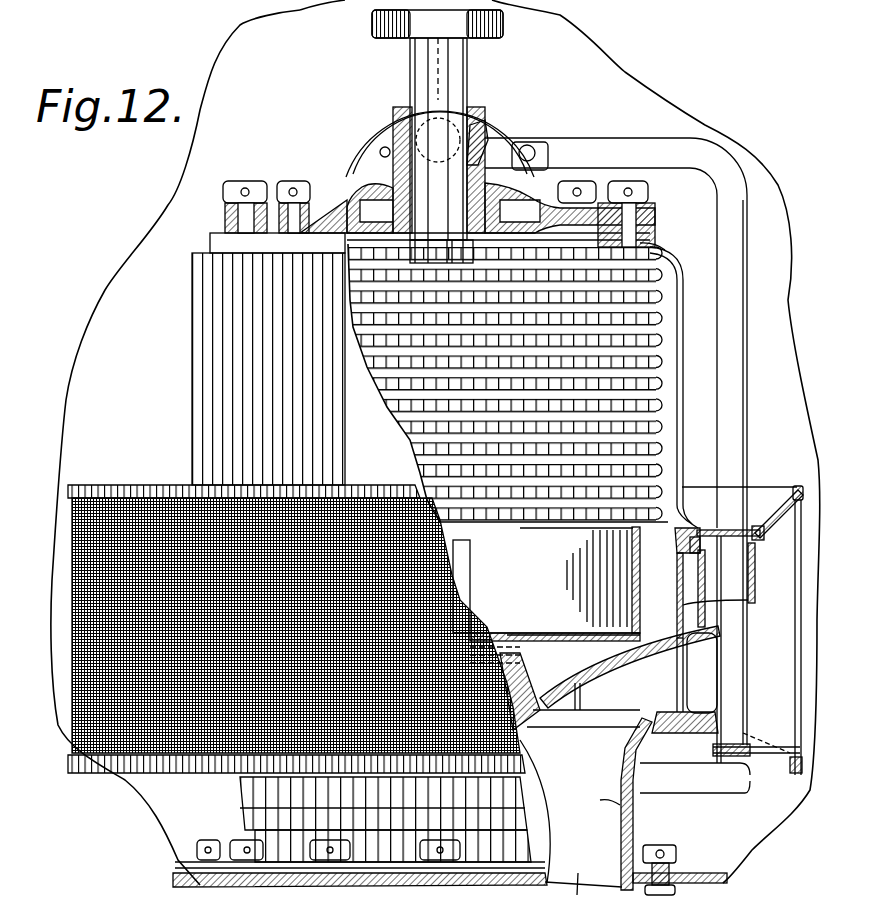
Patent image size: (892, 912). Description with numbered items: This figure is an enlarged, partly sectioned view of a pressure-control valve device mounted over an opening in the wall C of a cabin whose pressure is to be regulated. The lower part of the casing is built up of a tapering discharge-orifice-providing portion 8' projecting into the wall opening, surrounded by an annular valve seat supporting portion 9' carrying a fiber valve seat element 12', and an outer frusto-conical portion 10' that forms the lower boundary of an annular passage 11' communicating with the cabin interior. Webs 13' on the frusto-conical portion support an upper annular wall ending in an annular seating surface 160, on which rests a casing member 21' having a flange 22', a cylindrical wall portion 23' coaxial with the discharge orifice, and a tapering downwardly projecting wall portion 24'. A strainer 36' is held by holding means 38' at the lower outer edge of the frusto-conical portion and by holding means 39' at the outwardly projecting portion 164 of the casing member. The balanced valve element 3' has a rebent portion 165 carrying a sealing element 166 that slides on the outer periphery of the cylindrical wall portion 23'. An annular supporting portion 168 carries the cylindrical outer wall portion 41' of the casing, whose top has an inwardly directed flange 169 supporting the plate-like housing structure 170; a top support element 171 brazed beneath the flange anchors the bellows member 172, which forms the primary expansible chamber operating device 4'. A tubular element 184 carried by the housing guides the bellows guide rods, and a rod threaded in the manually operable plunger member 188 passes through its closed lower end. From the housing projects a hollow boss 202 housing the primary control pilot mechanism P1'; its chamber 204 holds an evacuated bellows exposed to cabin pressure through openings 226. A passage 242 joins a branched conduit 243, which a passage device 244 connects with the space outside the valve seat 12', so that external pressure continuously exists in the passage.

The manually operable plunger member 188 is at (508, 19).
The tubular element 184 is at (408, 104).
The boss 202 is at (366, 100).
The primary control pilot mechanism P1' is at (482, 69).
The passage 242 is at (481, 146).
The branched conduit 243 is at (533, 150).
The openings 226 is at (381, 149).
The housing structure 170 is at (341, 190).
The flange 169 is at (663, 254).
The top support element 171 is at (676, 271).
The bellows member 172 is at (667, 346).
The passage device 244 is at (735, 346).
The primary expansible chamber operating device 4' is at (557, 383).
The annular supporting portion 168 is at (708, 528).
The sealing element 166 is at (697, 530).
The outwardly projecting portion 164 is at (778, 512).
The annular seating surface 160 is at (756, 537).
The rebent portion 165 is at (678, 559).
The cylindrical wall portion 23' is at (660, 595).
The tapering downwardly projecting wall portion 24' is at (672, 593).
The flange 22' is at (767, 578).
The casing member 21' is at (731, 619).
The webs 13' is at (715, 649).
The balanced valve element 3' is at (610, 678).
The valve seat element 12' is at (669, 787).
The annular valve seat supporting portion 9' is at (675, 769).
The outer frusto-conical portion 10' is at (756, 726).
The annular passage 11' is at (766, 767).
The holding means 38' is at (789, 784).
The tapering discharge-orifice-providing portion 8' is at (571, 813).
The wall C is at (707, 873).
The strainer 36' is at (267, 625).
The holding means 39' is at (296, 614).
The cylindrical outer wall portion 41' is at (241, 359).
The chamber 204 is at (437, 892).